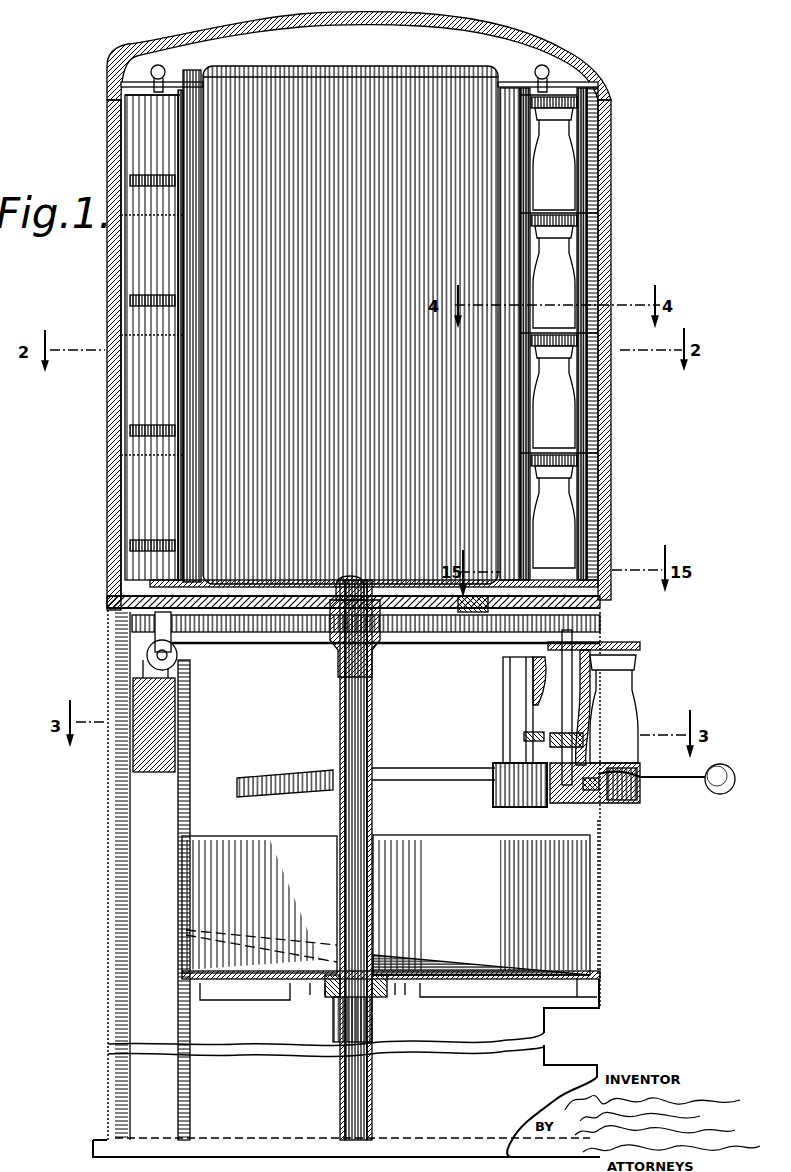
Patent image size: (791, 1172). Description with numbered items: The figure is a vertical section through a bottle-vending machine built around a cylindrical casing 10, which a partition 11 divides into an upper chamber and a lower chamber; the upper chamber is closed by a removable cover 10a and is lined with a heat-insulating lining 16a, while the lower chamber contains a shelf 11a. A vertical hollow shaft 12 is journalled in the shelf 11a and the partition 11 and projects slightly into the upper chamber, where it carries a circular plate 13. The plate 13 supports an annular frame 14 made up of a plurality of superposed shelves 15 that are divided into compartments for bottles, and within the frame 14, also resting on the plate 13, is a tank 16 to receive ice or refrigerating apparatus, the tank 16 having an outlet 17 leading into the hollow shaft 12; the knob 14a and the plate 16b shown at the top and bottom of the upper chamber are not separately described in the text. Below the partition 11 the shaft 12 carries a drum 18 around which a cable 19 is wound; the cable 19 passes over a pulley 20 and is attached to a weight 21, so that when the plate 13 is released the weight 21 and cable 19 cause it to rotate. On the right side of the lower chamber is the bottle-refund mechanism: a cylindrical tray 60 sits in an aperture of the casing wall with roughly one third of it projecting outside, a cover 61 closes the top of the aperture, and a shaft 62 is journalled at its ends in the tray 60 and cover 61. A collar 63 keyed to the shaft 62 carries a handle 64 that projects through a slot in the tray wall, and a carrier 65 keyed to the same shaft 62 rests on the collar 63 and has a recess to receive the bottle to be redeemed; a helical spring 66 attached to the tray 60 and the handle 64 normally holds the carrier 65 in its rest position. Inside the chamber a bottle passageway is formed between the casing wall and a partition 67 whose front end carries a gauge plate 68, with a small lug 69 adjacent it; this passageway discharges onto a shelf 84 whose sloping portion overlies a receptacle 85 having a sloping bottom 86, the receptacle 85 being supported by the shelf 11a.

The cylindrical casing 10 is at (107, 414).
The removable cover 10a is at (545, 42).
The partition 11 is at (107, 612).
The shelf 11a is at (600, 1004).
The vertical hollow shaft 12 is at (348, 706).
The circular plate 13 is at (598, 175).
The annular frame 14 is at (178, 135).
The knob 14a is at (549, 68).
The shelves 15 is at (153, 222).
The tank 16 is at (212, 362).
The lining 16a is at (108, 301).
The bottom plate 16b is at (122, 584).
The outlet 17 is at (352, 580).
The drum 18 is at (375, 650).
The cable 19 is at (298, 643).
The pulley 20 is at (177, 655).
The weight 21 is at (176, 712).
The cylindrical tray 60 is at (632, 806).
The cover 61 is at (616, 644).
The shaft 62 is at (562, 672).
The collar 63 is at (592, 790).
The handle 64 is at (697, 780).
The carrier 65 is at (634, 676).
The helical spring 66 is at (545, 786).
The partition 67 is at (505, 704).
The gauge plate 68 is at (528, 666).
The lug 69 is at (524, 737).
The shelf 84 is at (385, 774).
The receptacle 85 is at (242, 852).
The sloping bottom 86 is at (455, 962).